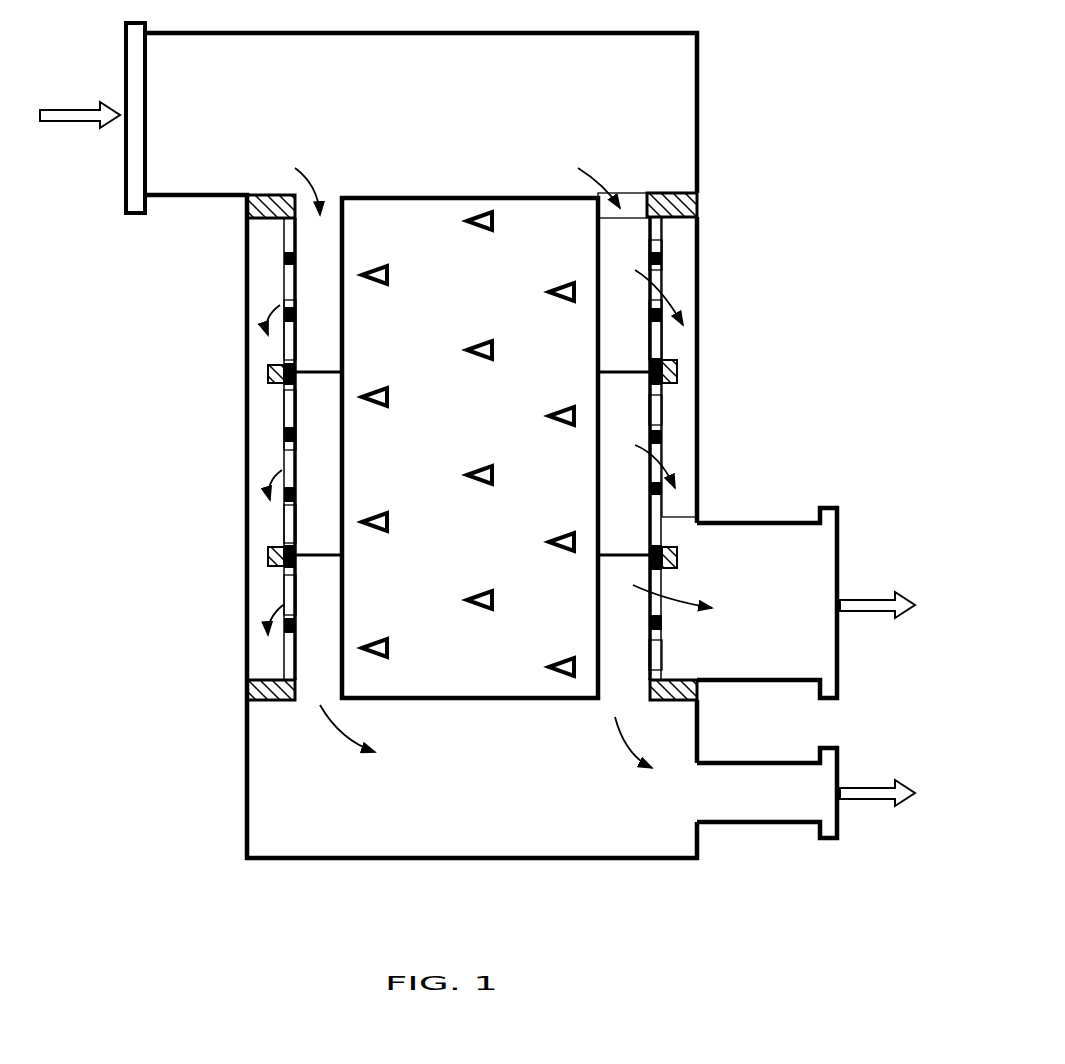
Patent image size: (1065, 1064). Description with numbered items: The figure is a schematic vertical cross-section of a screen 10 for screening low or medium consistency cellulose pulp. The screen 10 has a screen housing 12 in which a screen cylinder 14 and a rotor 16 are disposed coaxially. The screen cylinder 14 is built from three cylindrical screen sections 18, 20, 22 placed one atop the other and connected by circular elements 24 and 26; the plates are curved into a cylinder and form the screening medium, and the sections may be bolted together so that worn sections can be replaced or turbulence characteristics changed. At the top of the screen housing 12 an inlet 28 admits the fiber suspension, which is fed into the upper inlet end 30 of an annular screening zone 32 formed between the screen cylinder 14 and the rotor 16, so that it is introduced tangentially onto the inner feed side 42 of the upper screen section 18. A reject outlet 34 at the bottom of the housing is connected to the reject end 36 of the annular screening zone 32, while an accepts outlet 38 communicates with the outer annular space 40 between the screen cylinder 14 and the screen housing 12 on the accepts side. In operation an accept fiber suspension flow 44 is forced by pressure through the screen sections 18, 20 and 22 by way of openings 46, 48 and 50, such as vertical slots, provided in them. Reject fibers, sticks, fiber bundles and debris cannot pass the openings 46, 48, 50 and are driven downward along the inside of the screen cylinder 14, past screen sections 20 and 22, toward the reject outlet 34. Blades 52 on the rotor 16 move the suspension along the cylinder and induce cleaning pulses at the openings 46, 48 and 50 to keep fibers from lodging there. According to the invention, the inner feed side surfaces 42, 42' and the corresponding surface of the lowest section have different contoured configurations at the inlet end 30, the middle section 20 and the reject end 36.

The screen 10 is at (715, 80).
The screen housing 12 is at (703, 138).
The screen cylinder 14 is at (262, 436).
The rotor 16 is at (448, 426).
The screen section 18 is at (283, 262).
The screen section 20 is at (283, 516).
The screen section 22 is at (283, 602).
The circular element 24 is at (270, 373).
The circular element 26 is at (283, 568).
The inlet 28 is at (148, 85).
The inlet end 30 is at (663, 243).
The annular screening zone 32 is at (632, 200).
The reject outlet 34 is at (752, 812).
The reject end 36 is at (628, 610).
The accepts outlet 38 is at (752, 562).
The outer annular space 40 is at (687, 413).
The inner feed side 42 is at (611, 242).
The inner feed side surface section 42' is at (594, 395).
The accept fiber suspension flow 44 is at (688, 312).
The openings 46 is at (295, 350).
The openings 48 is at (294, 410).
The openings 50 is at (297, 590).
The blades 52 is at (472, 210).